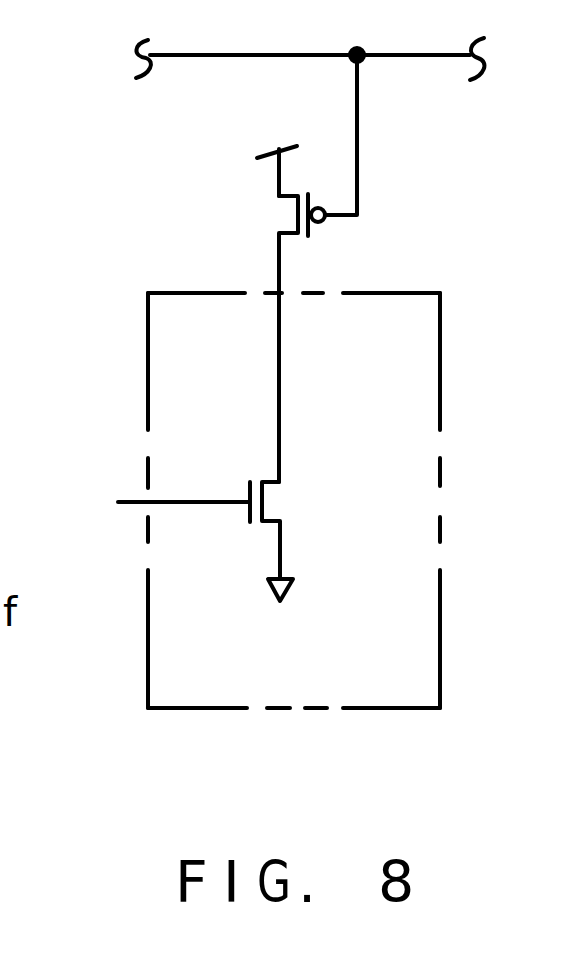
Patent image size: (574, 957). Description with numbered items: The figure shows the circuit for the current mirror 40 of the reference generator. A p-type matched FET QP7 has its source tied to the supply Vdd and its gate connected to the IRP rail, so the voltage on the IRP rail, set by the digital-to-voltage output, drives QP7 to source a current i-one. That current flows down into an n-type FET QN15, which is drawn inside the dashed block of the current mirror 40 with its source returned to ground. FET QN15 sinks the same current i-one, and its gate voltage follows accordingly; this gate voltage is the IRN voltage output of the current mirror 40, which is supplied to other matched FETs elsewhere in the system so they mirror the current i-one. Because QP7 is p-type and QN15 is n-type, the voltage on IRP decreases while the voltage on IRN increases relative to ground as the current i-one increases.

The current mirror 40 is at (253, 468).
The matched FET QP7 is at (252, 326).
The FET QN15 is at (320, 528).
The IRP rail IRP is at (354, 125).
The IRN voltage output IRN is at (145, 503).
The supply voltage Vdd is at (280, 142).